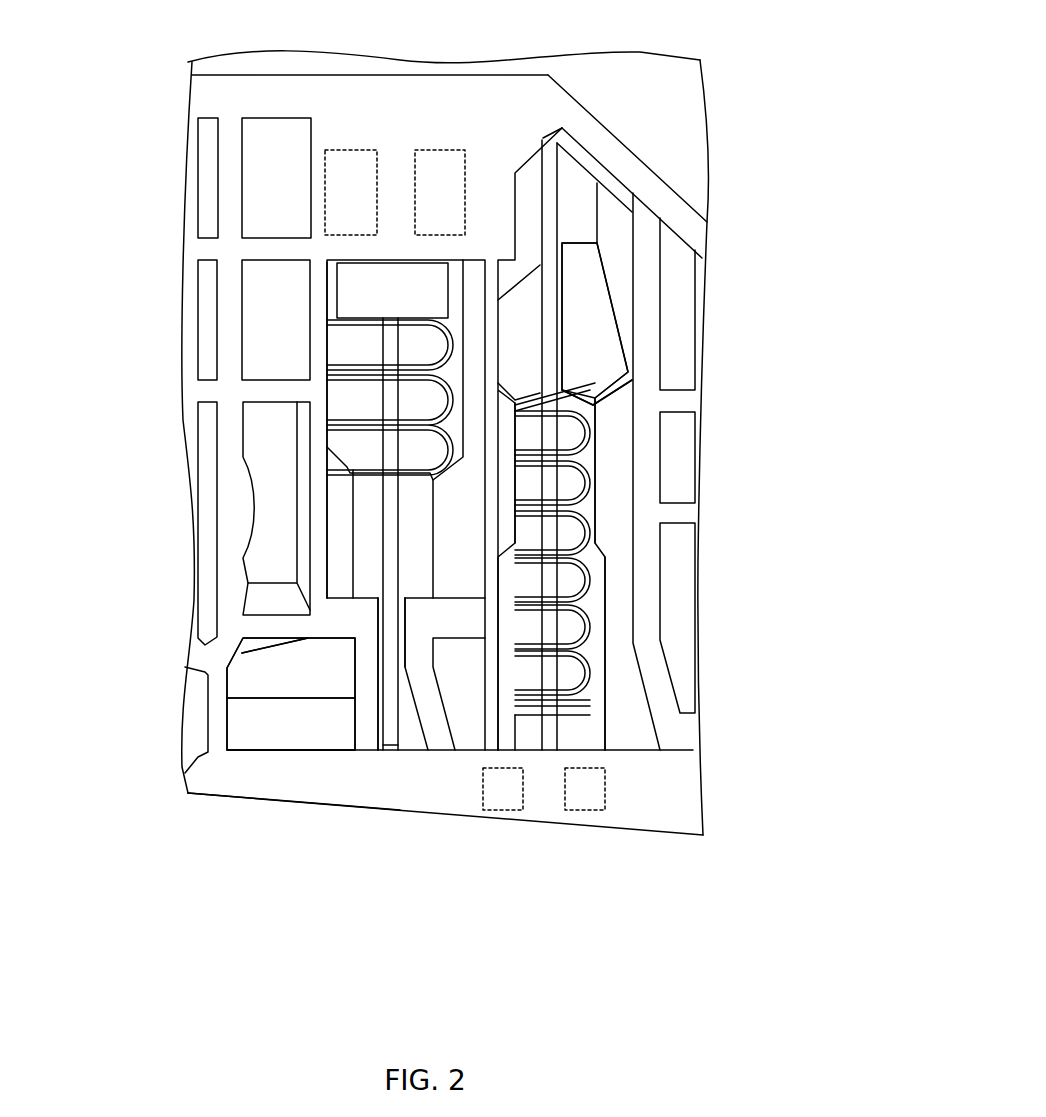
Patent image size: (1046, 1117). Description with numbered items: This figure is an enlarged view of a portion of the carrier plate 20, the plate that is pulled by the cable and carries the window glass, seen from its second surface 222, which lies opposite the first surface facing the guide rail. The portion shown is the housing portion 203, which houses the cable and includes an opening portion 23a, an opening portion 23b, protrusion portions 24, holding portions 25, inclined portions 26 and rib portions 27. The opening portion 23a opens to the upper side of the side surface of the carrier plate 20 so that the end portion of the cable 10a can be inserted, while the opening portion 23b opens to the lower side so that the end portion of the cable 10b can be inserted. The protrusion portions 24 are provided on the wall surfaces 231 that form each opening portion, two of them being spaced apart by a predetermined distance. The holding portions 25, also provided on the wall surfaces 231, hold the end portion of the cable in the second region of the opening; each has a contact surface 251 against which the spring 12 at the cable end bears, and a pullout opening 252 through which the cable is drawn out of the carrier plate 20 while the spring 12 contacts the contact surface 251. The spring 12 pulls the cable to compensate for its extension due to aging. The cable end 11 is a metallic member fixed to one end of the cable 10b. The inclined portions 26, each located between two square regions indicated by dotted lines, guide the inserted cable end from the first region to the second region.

The cable 10a is at (548, 140).
The cable 10b is at (390, 760).
The cable end 11 is at (353, 278).
The spring 12 is at (347, 373).
The carrier plate 20 is at (640, 95).
The housing portion 203 is at (245, 768).
The second surface 222 is at (621, 166).
The opening portion 23a is at (599, 716).
The opening portion 23b is at (343, 329).
The wall surface 231 is at (317, 541).
The protrusion portion 24 is at (348, 447).
The holding portion 25 is at (363, 685).
The contact surface 251 is at (240, 652).
The pullout opening 252 is at (375, 707).
The inclined portion 26 is at (390, 160).
The rib portion 27 is at (437, 160).